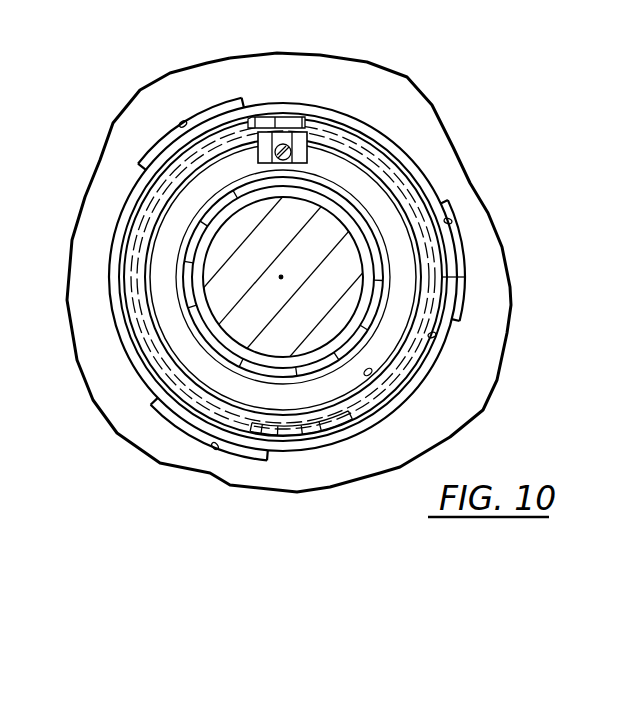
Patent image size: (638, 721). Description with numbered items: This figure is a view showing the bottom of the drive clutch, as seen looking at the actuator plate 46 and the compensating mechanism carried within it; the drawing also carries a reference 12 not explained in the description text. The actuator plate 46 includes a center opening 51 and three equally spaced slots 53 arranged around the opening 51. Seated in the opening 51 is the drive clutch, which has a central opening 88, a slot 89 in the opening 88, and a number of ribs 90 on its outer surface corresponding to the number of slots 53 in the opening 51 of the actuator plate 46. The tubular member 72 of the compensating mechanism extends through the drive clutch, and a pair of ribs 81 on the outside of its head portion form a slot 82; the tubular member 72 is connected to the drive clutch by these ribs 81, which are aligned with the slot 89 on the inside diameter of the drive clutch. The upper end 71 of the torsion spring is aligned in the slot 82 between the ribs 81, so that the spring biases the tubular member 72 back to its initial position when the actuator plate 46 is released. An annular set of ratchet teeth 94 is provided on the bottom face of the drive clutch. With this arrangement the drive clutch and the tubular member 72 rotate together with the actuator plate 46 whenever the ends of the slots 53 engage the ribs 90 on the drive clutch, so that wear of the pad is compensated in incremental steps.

The shaft bore 12 is at (330, 332).
The actuator plate 46 is at (507, 297).
The center opening 51 is at (432, 335).
The slots 53 is at (183, 124).
The upper end 71 is at (325, 150).
The tubular member 72 is at (340, 205).
The ribs 81 is at (308, 133).
The slot 82 is at (258, 157).
The central opening 88 is at (368, 372).
The slot 89 is at (287, 133).
The ribs 90 is at (212, 103).
The ratchet teeth 94 is at (303, 430).